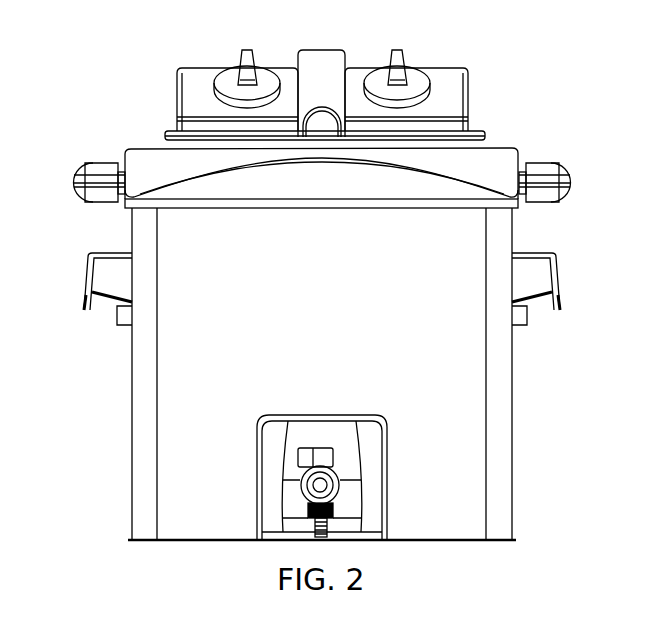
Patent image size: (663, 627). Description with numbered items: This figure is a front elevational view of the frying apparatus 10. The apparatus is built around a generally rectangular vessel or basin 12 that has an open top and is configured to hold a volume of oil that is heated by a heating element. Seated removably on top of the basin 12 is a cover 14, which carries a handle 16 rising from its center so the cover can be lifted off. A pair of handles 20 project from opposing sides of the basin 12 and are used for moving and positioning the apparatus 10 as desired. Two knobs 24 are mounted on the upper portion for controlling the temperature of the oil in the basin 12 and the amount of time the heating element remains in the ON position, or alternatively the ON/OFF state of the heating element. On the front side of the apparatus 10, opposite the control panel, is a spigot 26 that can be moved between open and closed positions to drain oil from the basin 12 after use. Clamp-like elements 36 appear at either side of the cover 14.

The frying apparatus 10 is at (118, 68).
The vessel or basin 12 is at (500, 428).
The cover 14 is at (148, 160).
The handle 16 is at (318, 63).
The handles 20 is at (92, 268).
The knobs 24 is at (230, 72).
The spigot 26 is at (297, 506).
The clamps 36 is at (90, 176).